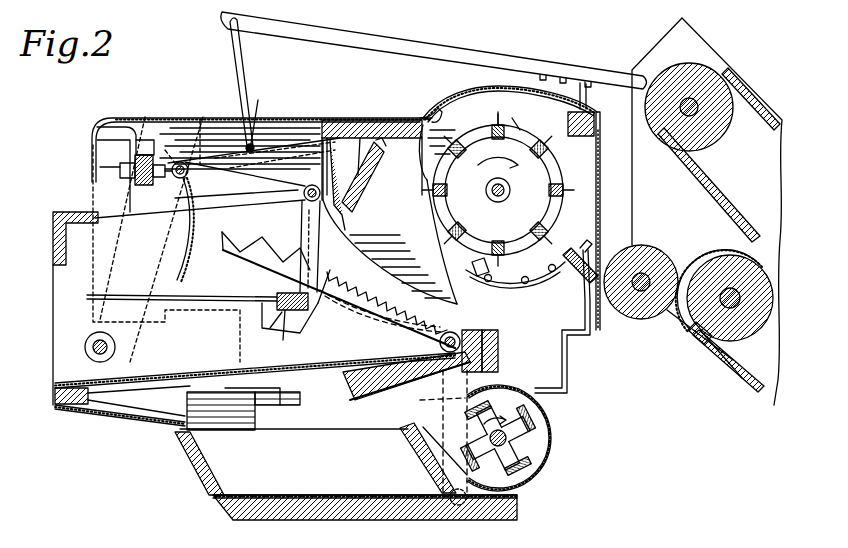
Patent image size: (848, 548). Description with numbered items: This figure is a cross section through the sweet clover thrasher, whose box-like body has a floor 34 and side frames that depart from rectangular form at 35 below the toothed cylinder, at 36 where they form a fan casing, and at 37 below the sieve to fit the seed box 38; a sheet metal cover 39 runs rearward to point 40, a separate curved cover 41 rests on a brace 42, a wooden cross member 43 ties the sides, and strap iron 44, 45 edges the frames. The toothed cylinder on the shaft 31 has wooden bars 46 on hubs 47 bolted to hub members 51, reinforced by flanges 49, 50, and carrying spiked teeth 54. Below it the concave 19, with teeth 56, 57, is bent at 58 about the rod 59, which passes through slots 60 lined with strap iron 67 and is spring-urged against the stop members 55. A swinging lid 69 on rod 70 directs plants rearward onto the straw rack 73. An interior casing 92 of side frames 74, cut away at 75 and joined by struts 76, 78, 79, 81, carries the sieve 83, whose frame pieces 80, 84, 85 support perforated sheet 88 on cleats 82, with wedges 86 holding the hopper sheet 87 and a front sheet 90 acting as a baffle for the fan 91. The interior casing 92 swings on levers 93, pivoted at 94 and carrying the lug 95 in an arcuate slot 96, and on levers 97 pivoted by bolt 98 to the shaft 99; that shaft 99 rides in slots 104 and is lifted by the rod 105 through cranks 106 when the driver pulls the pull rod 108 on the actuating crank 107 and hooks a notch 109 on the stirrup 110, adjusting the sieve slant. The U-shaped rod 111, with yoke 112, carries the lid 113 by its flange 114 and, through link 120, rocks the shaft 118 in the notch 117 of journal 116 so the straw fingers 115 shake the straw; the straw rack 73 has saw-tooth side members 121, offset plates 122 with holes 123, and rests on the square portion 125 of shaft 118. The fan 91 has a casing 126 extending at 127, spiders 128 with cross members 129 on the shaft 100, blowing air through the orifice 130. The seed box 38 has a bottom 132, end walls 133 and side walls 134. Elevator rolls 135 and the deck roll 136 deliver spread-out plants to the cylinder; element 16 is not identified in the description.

The casing dome 16 is at (465, 112).
The concave 19 is at (550, 321).
The shaft 31 is at (486, 190).
The floor 34 is at (390, 522).
The frame deviation below toothed cylinder 35 is at (560, 390).
The circular frame portion 36 is at (546, 436).
The cut-down frame portion 37 is at (230, 500).
The seed box 38 is at (199, 494).
The sheet metal cover 39 is at (285, 120).
The cover end point 40 is at (438, 115).
The curved sheet metal cover 41 is at (503, 86).
The brace 42 is at (585, 122).
The wooden frame member 43 is at (335, 125).
The strap iron covering 44 is at (93, 171).
The strap iron covering 45 is at (600, 160).
The wooden bars 46 is at (470, 172).
The circular hubs 47 is at (538, 200).
The inwardly turned flanges 49 is at (552, 215).
The upwardly extending flanges 50 is at (548, 283).
The hub members 51 is at (490, 198).
The spiked teeth 54 is at (505, 110).
The curved wooden member 55 is at (520, 283).
The spiked teeth 56 is at (572, 256).
The spiked teeth 57 is at (480, 265).
The bent-back flange 58 is at (598, 300).
The metal rod 59 is at (595, 260).
The slots 60 is at (599, 300).
The strap iron members 67 is at (580, 333).
The swinging lid 69 is at (372, 170).
The rod 70 is at (360, 138).
The straw rack 73 is at (402, 270).
The side frames 74 is at (63, 285).
The curved cut-away 75 is at (340, 222).
The strut 76 is at (53, 247).
The strut 78 is at (60, 214).
The strut 79 is at (300, 430).
The front frame piece 80 is at (455, 376).
The forward strut 81 is at (500, 356).
The wooden cleat 82 is at (258, 392).
The sieve 83 is at (181, 347).
The rear frame piece 84 is at (55, 394).
The side frame pieces 85 is at (108, 394).
The wedge shaped frame members 86 is at (123, 405).
The rectangular sheet of metal 87 is at (135, 416).
The perforated sheet metal 88 is at (137, 347).
The rectangular piece of sheet metal 90 is at (352, 400).
The fan 91 is at (552, 418).
The interior casing 92 is at (216, 270).
The lever 93 is at (400, 400).
The pivot 94 is at (470, 520).
The bolt or lug 95 is at (458, 335).
The arcuate slot 96 is at (498, 338).
The pivoted lever 97 is at (93, 321).
The bolt 98 is at (84, 349).
The shaft 99 is at (165, 150).
The shaft 100 is at (530, 452).
The slots 104 is at (140, 140).
The rod 105 is at (258, 138).
The crank member 106 is at (200, 120).
The actuating crank 107 is at (238, 48).
The pull rod 108 is at (430, 52).
The notches 109 is at (552, 75).
The U shaped stirrup 110 is at (598, 84).
The U shaped rod 111 is at (110, 168).
The yoke 112 is at (240, 198).
The sheet metal lid 113 is at (178, 258).
The flange 114 is at (182, 222).
The straw fingers 115 is at (198, 302).
The journal member 116 is at (270, 328).
The notch 117 is at (296, 312).
The shaft 118 is at (325, 318).
The link 120 is at (285, 140).
The side frame members 121 is at (225, 228).
The pieces of sheet metal 122 is at (400, 296).
The holes 123 is at (380, 325).
The square portion 125 is at (270, 308).
The circular casing 126 is at (552, 450).
The casing extension 127 is at (430, 452).
The spiders 128 is at (545, 462).
The cross members 129 is at (532, 485).
The orifice 130 is at (470, 410).
The sheet metal bottom 132 is at (292, 432).
The front and rear frame members 133 is at (198, 470).
The side frame members 134 is at (250, 430).
The elevator rolls 135 is at (712, 90).
The deck roll 136 is at (660, 318).